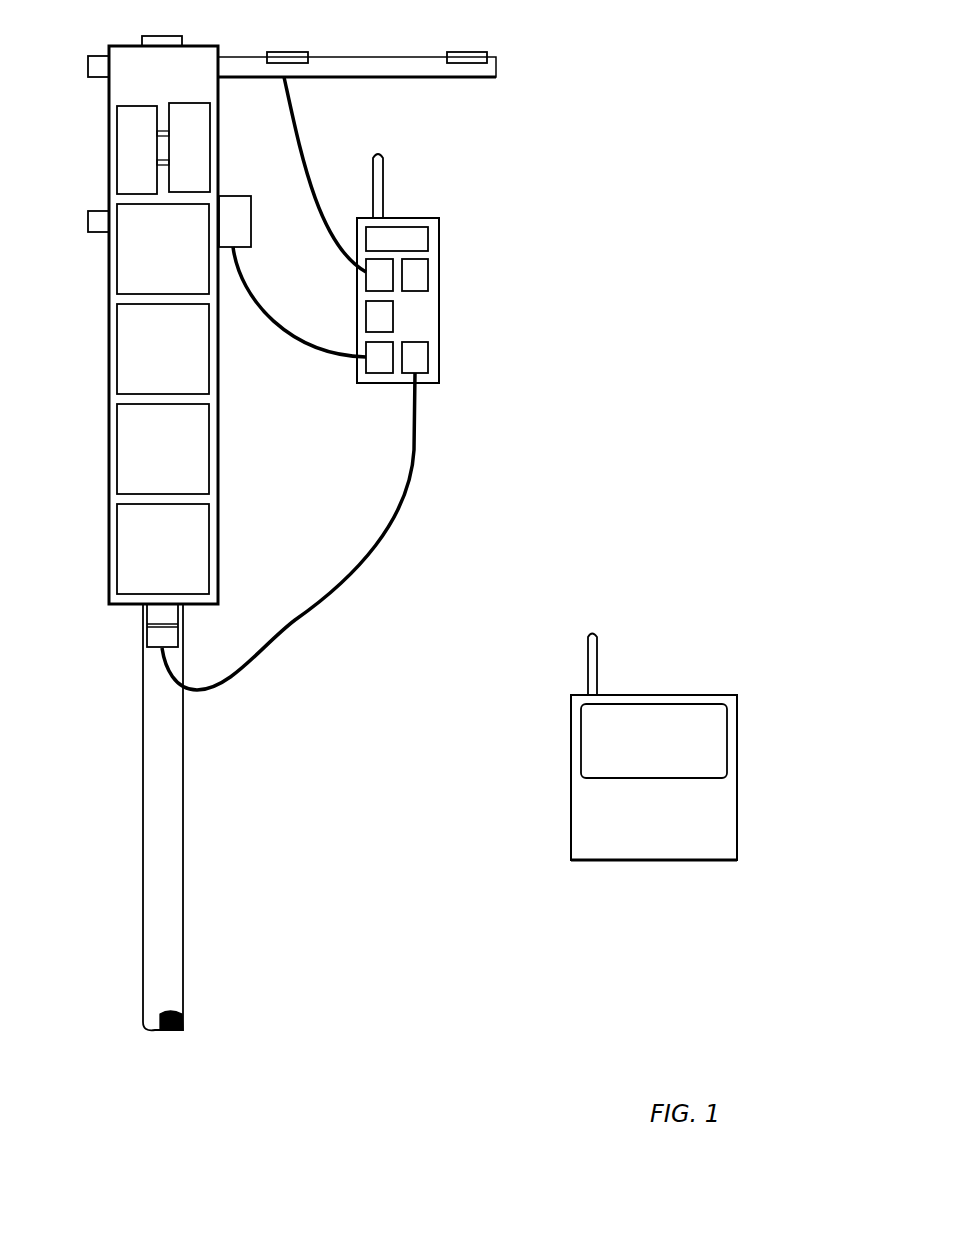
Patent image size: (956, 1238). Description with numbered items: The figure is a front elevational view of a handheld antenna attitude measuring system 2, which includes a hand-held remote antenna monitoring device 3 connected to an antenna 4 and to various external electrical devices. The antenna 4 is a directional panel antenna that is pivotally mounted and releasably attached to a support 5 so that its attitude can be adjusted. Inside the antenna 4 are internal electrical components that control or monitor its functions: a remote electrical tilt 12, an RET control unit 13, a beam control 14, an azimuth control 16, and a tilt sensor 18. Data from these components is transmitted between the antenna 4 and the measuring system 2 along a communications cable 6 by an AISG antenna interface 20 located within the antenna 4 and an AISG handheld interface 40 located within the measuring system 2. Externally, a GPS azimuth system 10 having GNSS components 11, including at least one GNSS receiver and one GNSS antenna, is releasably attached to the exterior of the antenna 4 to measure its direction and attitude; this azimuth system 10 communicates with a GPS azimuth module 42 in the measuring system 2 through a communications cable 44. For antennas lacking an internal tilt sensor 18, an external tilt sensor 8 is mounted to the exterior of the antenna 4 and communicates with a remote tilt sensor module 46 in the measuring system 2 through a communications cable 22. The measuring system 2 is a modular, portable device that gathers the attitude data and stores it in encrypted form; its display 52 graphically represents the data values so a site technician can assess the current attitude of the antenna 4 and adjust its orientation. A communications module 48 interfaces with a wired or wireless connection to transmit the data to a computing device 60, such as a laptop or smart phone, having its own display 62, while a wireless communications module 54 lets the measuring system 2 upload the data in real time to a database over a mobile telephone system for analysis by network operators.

The handheld antenna attitude measuring system 2 is at (653, 73).
The hand-held remote antenna monitoring device 3 is at (457, 185).
The antenna 4 is at (218, 498).
The support 5 is at (143, 812).
The communications cable 6 is at (333, 575).
The external tilt sensor 8 is at (233, 196).
The GPS azimuth system 10 is at (377, 57).
The GNSS components 11 is at (285, 52).
The remote electrical tilt 12 is at (117, 148).
The RET control unit 13 is at (190, 103).
The beam control 14 is at (117, 237).
The azimuth control 16 is at (117, 328).
The tilt sensor 18 is at (117, 418).
The AISG antenna interface 20 is at (117, 515).
The communications cable 22 is at (300, 350).
The AISG handheld interface 40 is at (440, 342).
The GPS azimuth module 42 is at (367, 290).
The communications cable 44 is at (298, 148).
The remote tilt sensor module 46 is at (366, 373).
The communications module 48 is at (430, 258).
The display 52 is at (432, 227).
The wireless communications module 54 is at (366, 318).
The computing device 60 is at (737, 828).
The display 62 is at (727, 740).